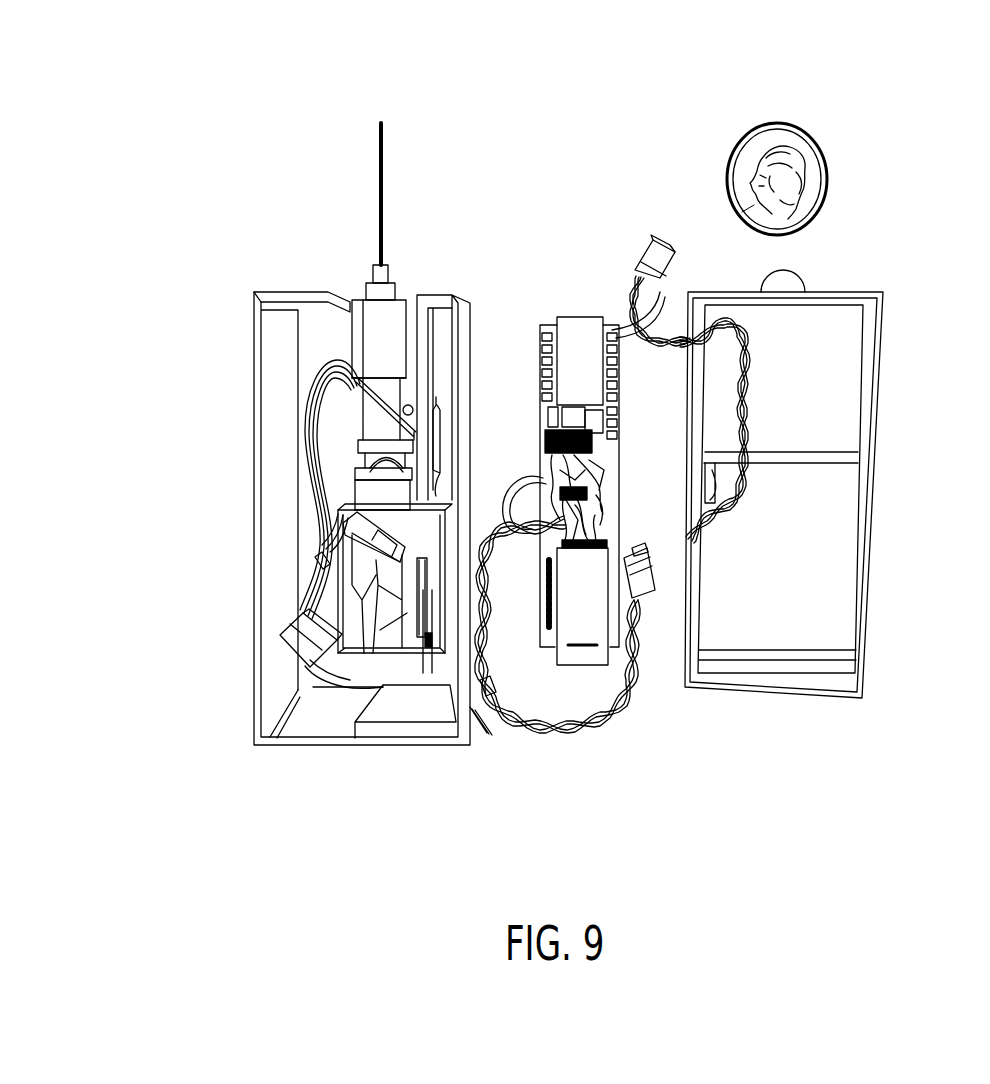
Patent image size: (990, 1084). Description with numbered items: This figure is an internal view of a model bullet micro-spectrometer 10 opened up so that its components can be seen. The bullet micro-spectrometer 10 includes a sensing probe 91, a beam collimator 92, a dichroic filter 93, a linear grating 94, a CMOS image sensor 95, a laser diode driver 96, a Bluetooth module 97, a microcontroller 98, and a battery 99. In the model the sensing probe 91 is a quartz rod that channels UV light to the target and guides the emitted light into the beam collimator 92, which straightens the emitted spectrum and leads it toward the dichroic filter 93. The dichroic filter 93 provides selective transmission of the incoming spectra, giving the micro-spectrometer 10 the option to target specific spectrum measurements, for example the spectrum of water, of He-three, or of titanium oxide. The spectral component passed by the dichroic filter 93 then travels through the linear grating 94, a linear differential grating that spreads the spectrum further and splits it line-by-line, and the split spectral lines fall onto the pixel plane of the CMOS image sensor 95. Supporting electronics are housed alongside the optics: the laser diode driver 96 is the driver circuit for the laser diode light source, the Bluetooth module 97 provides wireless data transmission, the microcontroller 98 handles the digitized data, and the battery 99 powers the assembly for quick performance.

The bullet micro-spectrometer 10 is at (185, 127).
The sensing probe 91 is at (377, 180).
The beam collimator 92 is at (370, 328).
The dichroic filter 93 is at (363, 403).
The linear grating 94 is at (363, 548).
The CMOS image sensor 95 is at (431, 633).
The laser diode driver 96 is at (585, 325).
The Bluetooth module 97 is at (603, 617).
The microcontroller 98 is at (625, 456).
The battery 99 is at (782, 543).